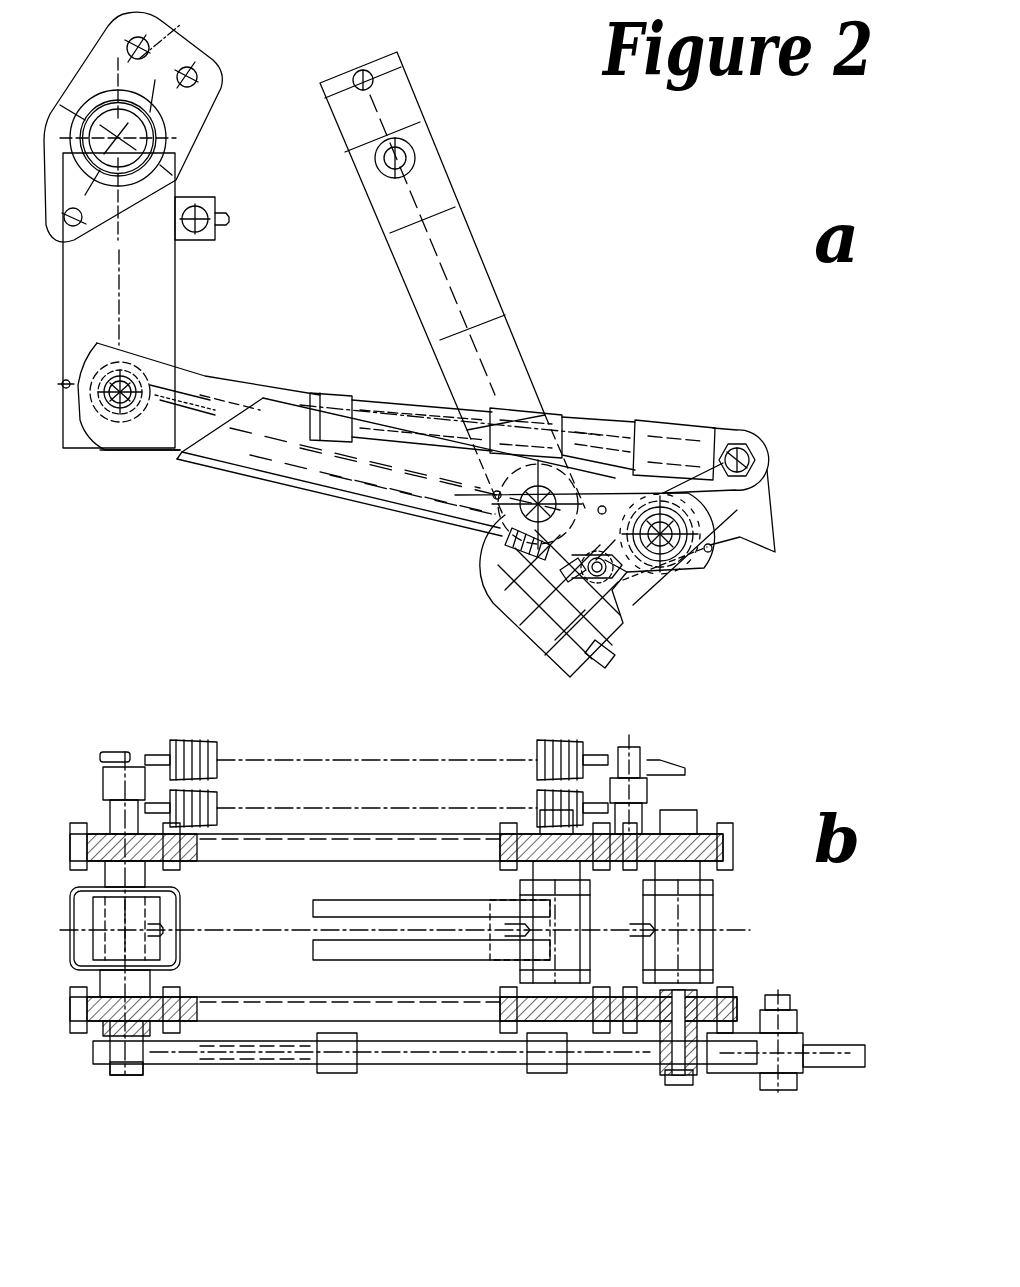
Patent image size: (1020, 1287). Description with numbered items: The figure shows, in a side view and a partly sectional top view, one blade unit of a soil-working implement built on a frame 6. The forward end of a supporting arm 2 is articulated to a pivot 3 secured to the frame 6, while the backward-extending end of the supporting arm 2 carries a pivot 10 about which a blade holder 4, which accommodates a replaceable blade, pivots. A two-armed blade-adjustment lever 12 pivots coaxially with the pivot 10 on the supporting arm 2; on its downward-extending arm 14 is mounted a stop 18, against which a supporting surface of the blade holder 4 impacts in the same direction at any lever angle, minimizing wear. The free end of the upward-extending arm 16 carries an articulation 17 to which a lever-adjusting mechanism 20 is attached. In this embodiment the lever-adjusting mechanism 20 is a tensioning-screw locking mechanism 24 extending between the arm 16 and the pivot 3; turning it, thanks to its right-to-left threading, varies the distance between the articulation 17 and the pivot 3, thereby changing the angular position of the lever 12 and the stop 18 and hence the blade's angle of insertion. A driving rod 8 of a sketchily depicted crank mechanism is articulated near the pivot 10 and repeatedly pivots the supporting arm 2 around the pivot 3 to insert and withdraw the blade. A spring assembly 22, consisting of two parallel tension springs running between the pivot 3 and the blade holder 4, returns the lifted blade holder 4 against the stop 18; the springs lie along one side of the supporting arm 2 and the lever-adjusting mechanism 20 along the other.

In FIG. 2a, the supporting arm 2 is at (232, 392).
In FIG. 2b, the supporting arm 2 is at (243, 850).
In FIG. 2a, the pivot 3 is at (115, 430).
In FIG. 2b, the pivot 3 is at (120, 862).
In FIG. 2a, the blade holder 4 is at (636, 585).
In FIG. 2b, the blade holder 4 is at (648, 817).
In FIG. 2a, the frame 6 is at (160, 285).
In FIG. 2b, the frame 6 is at (180, 907).
In FIG. 2a, the driving rod 8 is at (435, 181).
In FIG. 2b, the driving rod 8 is at (318, 945).
In FIG. 2a, the pivot 10 is at (690, 565).
In FIG. 2b, the pivot 10 is at (690, 912).
In FIG. 2a, the blade-adjustment lever 12 is at (710, 547).
In FIG. 2a, the downward-extending arm 14 is at (488, 555).
In FIG. 2a, the upward-extending arm 16 is at (773, 480).
In FIG. 2a, the articulation 17 is at (745, 445).
In FIG. 2a, the stop 18 is at (485, 624).
In FIG. 2a, the lever-adjusting mechanism 20 is at (620, 402).
In FIG. 2b, the lever-adjusting mechanism 20 is at (312, 1089).
In FIG. 2b, the spring assembly 22 is at (215, 760).
In FIG. 2a, the tensioning-screw locking mechanism 24 is at (400, 398).
In FIG. 2b, the tensioning-screw locking mechanism 24 is at (445, 1066).